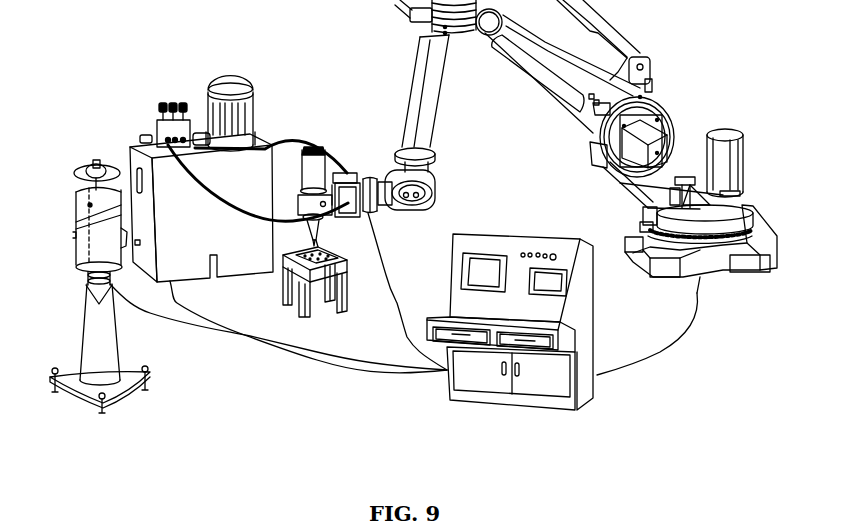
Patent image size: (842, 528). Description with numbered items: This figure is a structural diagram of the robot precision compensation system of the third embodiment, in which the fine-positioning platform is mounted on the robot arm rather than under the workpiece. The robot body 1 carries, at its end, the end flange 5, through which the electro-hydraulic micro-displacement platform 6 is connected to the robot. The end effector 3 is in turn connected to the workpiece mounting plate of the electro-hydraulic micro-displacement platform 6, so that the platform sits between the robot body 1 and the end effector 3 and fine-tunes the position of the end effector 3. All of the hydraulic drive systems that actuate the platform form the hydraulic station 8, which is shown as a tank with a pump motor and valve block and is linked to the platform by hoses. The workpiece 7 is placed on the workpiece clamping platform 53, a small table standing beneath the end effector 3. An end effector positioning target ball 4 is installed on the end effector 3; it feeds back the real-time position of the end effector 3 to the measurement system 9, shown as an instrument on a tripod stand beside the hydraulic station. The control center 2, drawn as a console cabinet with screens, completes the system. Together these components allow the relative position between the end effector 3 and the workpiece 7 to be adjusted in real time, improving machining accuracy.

The robot body 1 is at (668, 168).
The control center 2 is at (587, 360).
The end effector 3 is at (318, 163).
The end effector positioning target ball 4 is at (329, 174).
The end flange 5 is at (366, 212).
The electro-hydraulic micro-displacement platform 6 is at (347, 219).
The workpiece 7 is at (343, 266).
The hydraulic station 8 is at (239, 179).
The measurement system 9 is at (80, 247).
The workpiece clamping platform 53 is at (313, 312).